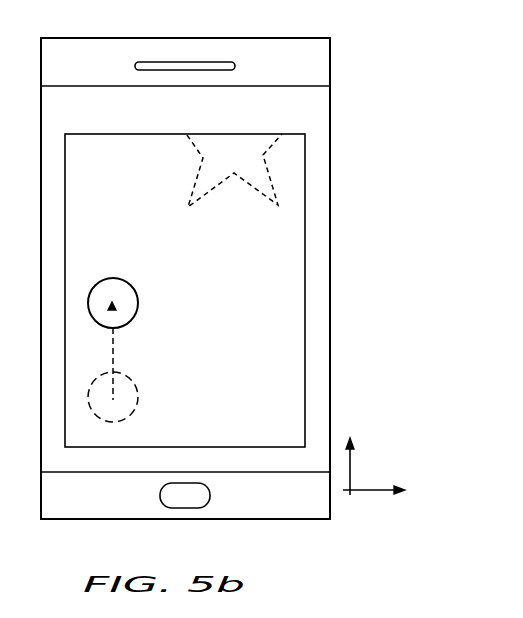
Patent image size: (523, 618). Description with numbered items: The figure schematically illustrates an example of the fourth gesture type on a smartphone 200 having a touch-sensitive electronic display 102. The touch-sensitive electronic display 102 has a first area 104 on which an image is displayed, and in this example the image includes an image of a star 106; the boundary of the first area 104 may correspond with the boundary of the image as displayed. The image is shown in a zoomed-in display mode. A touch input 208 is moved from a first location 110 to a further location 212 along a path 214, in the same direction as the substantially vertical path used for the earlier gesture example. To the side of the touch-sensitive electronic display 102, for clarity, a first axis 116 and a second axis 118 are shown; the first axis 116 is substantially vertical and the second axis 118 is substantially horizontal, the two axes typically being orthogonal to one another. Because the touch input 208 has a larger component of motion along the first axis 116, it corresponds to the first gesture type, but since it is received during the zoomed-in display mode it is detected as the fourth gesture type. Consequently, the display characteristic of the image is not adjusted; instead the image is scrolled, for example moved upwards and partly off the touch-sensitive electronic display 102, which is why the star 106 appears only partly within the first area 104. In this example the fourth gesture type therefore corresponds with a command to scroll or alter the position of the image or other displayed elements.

The smartphone 200 is at (145, 37).
The touch-sensitive electronic display 102 is at (330, 225).
The first area 104 is at (306, 324).
The star 106 is at (201, 170).
The touch input 208 is at (93, 283).
The further location 212 is at (137, 298).
The path 214 is at (116, 352).
The first location 110 is at (133, 383).
The first axis 116 is at (352, 440).
The second axis 118 is at (378, 489).